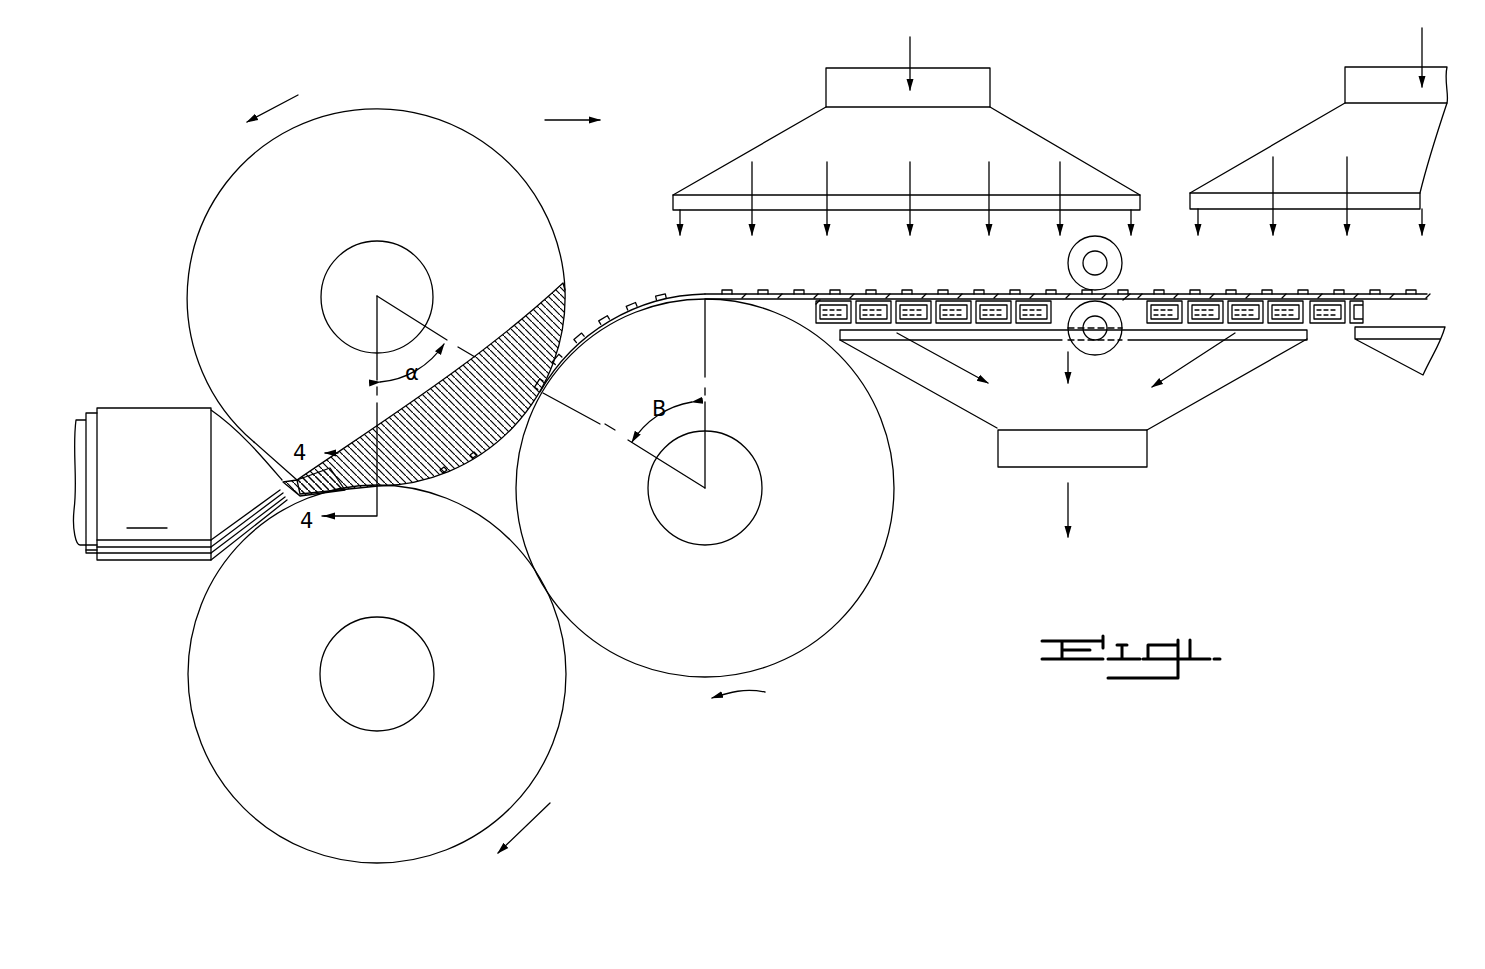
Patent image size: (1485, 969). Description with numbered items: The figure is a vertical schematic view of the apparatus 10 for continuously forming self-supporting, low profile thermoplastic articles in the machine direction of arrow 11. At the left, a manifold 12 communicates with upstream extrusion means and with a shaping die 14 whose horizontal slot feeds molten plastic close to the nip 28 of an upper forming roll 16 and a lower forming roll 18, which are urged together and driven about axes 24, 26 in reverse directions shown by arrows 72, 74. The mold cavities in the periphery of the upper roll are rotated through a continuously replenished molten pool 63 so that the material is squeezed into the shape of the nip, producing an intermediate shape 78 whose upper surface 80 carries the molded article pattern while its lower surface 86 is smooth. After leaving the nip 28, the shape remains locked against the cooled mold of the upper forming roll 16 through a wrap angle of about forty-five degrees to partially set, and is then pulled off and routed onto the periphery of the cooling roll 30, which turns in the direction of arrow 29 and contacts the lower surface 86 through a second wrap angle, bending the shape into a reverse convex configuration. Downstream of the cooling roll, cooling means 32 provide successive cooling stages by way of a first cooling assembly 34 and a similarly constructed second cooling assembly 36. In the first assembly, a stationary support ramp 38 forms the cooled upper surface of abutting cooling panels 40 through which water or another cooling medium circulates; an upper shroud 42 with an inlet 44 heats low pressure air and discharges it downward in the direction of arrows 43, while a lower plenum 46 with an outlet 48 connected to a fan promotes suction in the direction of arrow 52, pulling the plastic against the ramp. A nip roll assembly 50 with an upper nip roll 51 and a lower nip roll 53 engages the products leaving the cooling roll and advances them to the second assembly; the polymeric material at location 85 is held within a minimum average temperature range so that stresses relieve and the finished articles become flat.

The apparatus 10 is at (572, 84).
The arrow of machine direction 11 is at (568, 120).
The manifold 12 is at (150, 408).
The shaping die 14 is at (232, 515).
The upper forming roll 16 is at (350, 294).
The lower forming roll 18 is at (377, 680).
The axis of upper forming roll 24 is at (372, 294).
The axis of lower forming roll 26 is at (377, 675).
The nip 28 is at (478, 490).
The arrow of cooling roll rotation 29 is at (708, 708).
The cooling roll 30 is at (858, 582).
The cooling means 32 is at (1318, 131).
The first cooling assembly 34 is at (906, 130).
The second cooling assembly 36 is at (1333, 92).
The support ramp 38 is at (822, 312).
The cooling panels 40 is at (840, 332).
The upper shroud 42 is at (1072, 153).
The arrows of downward air flow 43 is at (987, 182).
The inlet 44 is at (826, 87).
The lower plenum 46 is at (1073, 423).
The outlet 48 is at (1015, 465).
The nip roll assembly 50 is at (1120, 292).
The upper nip roll 51 is at (1123, 262).
The arrow of suction air flow 52 is at (1072, 503).
The lower nip roll 53 is at (1100, 345).
The molten pool 63 is at (292, 497).
The arrow of upper forming roll rotation 72 is at (265, 108).
The arrow of lower forming roll rotation 74 is at (530, 833).
The intermediate shape 78 is at (450, 490).
The upper surface of intermediate shape 80 is at (478, 482).
The location of polymeric material on cooling means 85 is at (800, 294).
The lower surface of intermediate shape 86 is at (518, 430).